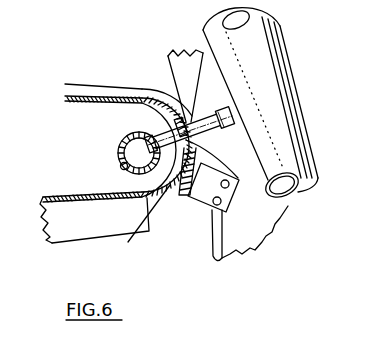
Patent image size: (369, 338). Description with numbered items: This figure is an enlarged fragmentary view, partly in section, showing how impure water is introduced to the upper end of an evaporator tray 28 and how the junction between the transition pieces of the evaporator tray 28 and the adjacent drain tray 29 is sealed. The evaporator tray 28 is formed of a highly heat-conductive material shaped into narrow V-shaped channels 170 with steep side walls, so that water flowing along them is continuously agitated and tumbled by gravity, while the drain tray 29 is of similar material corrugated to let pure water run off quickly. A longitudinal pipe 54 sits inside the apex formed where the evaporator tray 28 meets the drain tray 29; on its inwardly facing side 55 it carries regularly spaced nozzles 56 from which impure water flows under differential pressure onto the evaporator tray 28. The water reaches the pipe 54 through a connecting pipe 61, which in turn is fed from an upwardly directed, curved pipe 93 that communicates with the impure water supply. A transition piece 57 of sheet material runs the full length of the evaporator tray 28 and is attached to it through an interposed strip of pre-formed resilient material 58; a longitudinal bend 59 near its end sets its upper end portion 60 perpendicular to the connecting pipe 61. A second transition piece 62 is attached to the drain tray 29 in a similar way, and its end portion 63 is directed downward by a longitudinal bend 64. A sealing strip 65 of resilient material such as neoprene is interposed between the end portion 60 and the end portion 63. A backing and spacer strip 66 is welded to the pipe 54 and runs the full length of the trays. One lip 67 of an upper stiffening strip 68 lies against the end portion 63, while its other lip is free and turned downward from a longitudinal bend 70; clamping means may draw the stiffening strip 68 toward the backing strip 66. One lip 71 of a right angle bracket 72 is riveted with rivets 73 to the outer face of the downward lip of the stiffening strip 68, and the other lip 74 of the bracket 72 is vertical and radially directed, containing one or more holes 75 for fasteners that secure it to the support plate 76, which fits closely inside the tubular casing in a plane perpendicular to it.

The evaporator tray 28 is at (43, 232).
The drain tray 29 is at (110, 82).
The pipe 54 is at (118, 147).
The inwardly facing side 55 is at (110, 158).
The nozzle 56 is at (119, 167).
The transition piece 57 is at (142, 224).
The strip of pre-formed resilient material 58 is at (70, 197).
The longitudinal bend 59 is at (155, 182).
The upper end portion 60 is at (175, 125).
The connecting pipe 61 is at (189, 124).
The transition piece 62 is at (86, 101).
The end portion 63 is at (200, 151).
The longitudinal bend 64 is at (158, 89).
The sealing strip 65 is at (222, 201).
The backing and spacer strip 66 is at (145, 147).
The lip 67 is at (186, 112).
The upper stiffening strip 68 is at (207, 138).
The longitudinal bend 70 is at (218, 163).
The lip 71 is at (186, 198).
The right angle bracket 72 is at (217, 218).
The rivet 73 is at (190, 196).
The lip 74 is at (239, 181).
The hole 75 is at (222, 109).
The support plate 76 is at (185, 74).
The pipe 93 is at (263, 41).
The V-shaped channel 170 is at (90, 244).